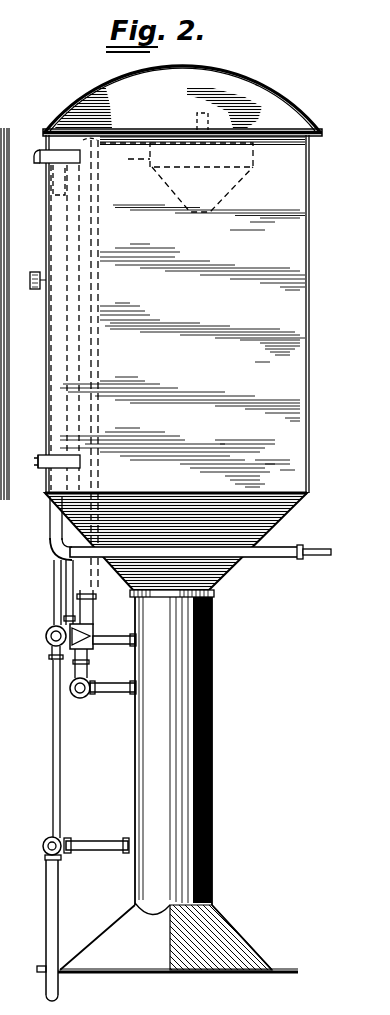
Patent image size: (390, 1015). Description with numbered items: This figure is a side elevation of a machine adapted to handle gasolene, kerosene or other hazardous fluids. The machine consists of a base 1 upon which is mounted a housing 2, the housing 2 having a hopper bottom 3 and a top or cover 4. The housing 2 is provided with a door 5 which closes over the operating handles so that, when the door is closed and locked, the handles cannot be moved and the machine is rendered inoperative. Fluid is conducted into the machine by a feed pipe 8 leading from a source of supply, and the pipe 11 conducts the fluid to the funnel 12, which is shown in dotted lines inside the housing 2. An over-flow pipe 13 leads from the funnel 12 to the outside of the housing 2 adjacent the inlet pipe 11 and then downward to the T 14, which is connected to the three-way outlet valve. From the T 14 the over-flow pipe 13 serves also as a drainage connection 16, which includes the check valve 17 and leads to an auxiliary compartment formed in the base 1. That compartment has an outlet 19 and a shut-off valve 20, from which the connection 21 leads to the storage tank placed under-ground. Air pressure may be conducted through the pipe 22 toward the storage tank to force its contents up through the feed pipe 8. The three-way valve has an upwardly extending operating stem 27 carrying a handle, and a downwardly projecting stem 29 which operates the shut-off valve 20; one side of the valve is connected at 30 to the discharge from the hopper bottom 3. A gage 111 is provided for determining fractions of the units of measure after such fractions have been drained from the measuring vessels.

The base 1 is at (212, 780).
The housing 2 is at (308, 431).
The hopper bottom 3 is at (33, 650).
The top or cover 4 is at (273, 101).
The door 5 is at (24, 420).
The feed pipe 8 is at (278, 553).
The pipe 11 is at (120, 143).
The funnel 12 is at (238, 181).
The over-flow pipe 13 is at (87, 604).
The T 14 is at (89, 650).
The drainage connection 16 is at (111, 695).
The check valve 17 is at (80, 699).
The outlet 19 is at (100, 842).
The shut-off valve 20 is at (43, 843).
The connection 21 is at (46, 913).
The pipe 22 is at (316, 558).
The operating stem 27 is at (55, 569).
The stem 29 is at (60, 768).
The connection 30 is at (96, 636).
The gage 111 is at (68, 586).